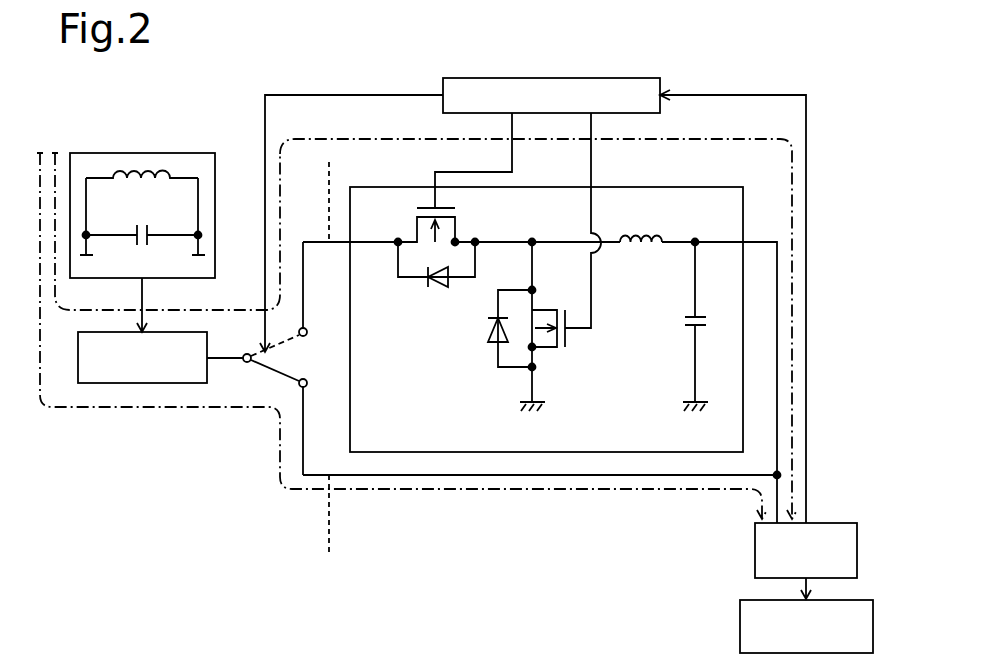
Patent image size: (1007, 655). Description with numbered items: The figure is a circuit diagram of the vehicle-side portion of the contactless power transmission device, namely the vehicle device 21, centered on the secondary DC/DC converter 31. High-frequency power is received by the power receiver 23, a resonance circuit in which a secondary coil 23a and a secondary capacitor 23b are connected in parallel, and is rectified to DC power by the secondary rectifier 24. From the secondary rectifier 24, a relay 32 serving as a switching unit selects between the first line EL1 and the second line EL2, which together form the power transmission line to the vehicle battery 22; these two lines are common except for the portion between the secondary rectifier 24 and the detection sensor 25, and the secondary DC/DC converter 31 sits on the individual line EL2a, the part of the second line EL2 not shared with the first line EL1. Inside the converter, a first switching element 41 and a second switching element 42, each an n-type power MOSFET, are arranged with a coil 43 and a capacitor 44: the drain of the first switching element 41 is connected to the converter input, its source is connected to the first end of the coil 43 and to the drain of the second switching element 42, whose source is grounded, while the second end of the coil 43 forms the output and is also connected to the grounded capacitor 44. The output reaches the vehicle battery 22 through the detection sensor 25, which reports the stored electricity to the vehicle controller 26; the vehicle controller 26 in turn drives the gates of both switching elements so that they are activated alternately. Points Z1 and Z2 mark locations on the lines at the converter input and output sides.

The vehicle device 21 is at (828, 87).
The vehicle battery 22 is at (740, 622).
The power receiver 23 is at (205, 153).
The secondary coil 23a is at (143, 165).
The secondary capacitor 23b is at (150, 240).
The secondary rectifier 24 is at (108, 386).
The detection sensor 25 is at (755, 548).
The vehicle controller 26 is at (640, 78).
The secondary DC/DC converter 31 is at (712, 187).
The relay 32 is at (262, 365).
The first switching element 41 is at (455, 232).
The second switching element 42 is at (543, 349).
The coil 43 is at (656, 234).
The capacitor 44 is at (690, 316).
The first line EL1 is at (577, 490).
The second line EL2 is at (160, 302).
The individual line EL2a is at (662, 139).
The first boundary (impedance point) Z1 is at (319, 543).
The second boundary (impedance point) Z2 is at (319, 182).